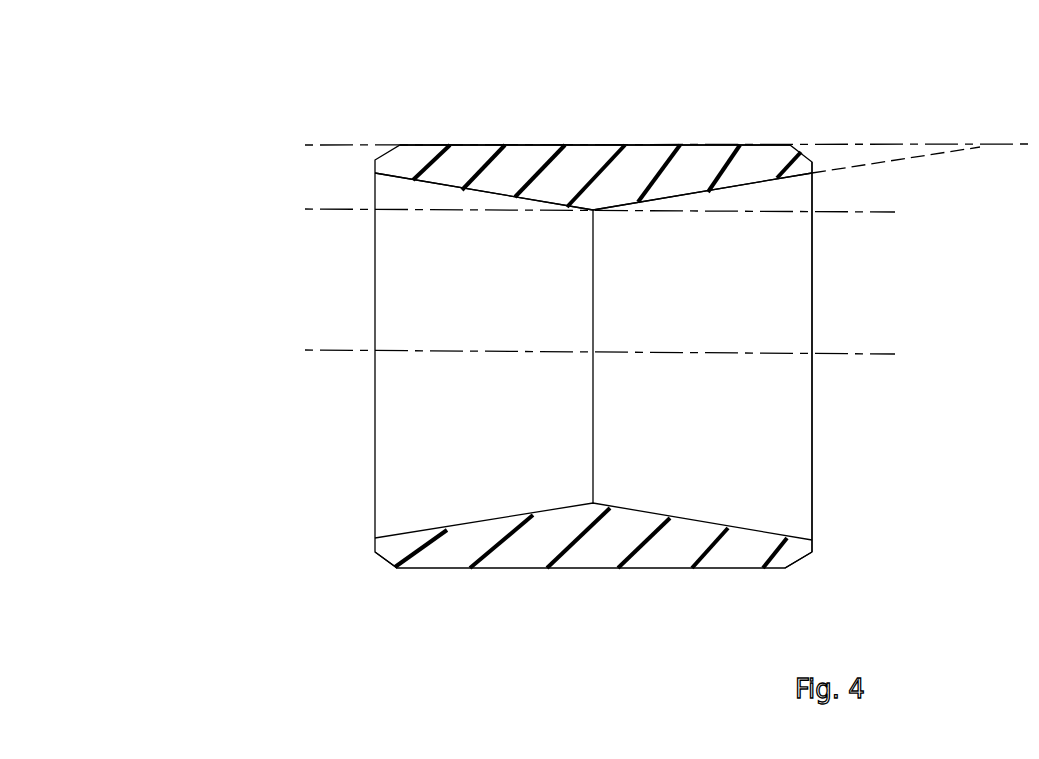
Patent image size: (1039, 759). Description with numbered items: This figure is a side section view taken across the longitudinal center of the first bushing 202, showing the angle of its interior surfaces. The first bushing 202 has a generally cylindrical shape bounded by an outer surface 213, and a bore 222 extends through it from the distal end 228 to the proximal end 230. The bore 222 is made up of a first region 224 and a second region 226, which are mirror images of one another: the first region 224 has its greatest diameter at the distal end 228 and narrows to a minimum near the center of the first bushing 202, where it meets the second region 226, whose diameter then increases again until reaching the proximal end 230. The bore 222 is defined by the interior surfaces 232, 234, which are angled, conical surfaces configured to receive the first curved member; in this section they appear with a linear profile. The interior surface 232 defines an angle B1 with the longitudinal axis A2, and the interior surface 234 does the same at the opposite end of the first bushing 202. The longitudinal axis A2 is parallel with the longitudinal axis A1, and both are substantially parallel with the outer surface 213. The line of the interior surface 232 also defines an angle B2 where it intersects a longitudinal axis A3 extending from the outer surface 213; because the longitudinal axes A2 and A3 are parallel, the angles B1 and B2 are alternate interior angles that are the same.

The first bushing 202 is at (867, 512).
The outer surface 213 is at (537, 145).
The bore 222 is at (353, 307).
The first region 224 is at (422, 517).
The second region 226 is at (755, 518).
The distal end 228 is at (367, 562).
The proximal end 230 is at (818, 558).
The interior surface 232 is at (688, 197).
The interior surface 234 is at (452, 187).
The longitudinal axis A1 is at (577, 350).
The longitudinal axis A2 is at (577, 210).
The longitudinal axis A3 is at (647, 146).
The angle B1 is at (633, 208).
The angle B2 is at (940, 148).